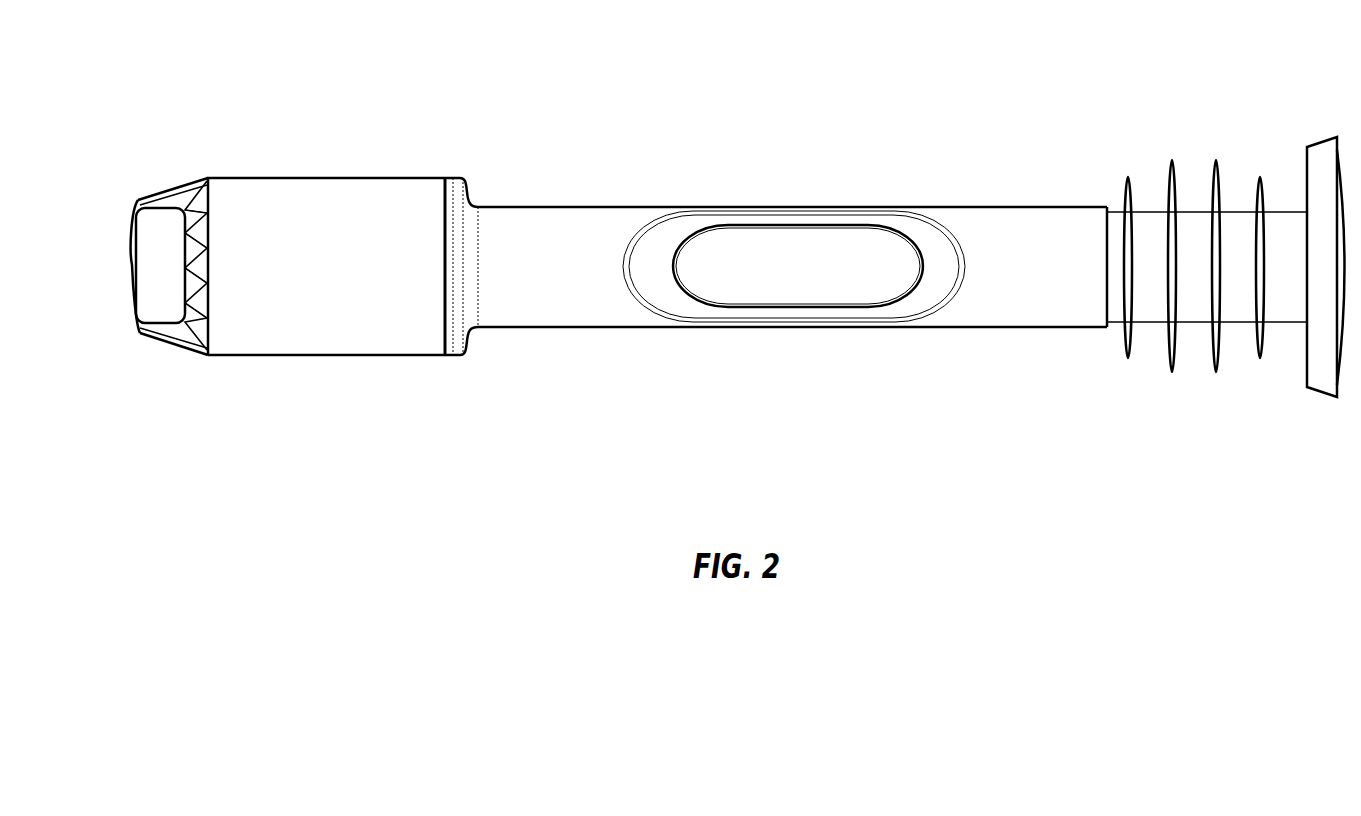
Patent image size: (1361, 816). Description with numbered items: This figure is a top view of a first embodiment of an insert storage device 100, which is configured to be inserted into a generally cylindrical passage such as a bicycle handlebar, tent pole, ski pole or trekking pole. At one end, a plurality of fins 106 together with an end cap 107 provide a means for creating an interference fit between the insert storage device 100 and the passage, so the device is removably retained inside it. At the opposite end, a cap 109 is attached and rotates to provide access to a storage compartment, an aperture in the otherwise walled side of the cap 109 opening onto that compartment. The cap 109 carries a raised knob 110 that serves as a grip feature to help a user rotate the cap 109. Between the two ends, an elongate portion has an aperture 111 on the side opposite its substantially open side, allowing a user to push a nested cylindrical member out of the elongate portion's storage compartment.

The insert storage device 100 is at (118, 66).
The fins 106 is at (1260, 356).
The end cap 107 is at (1320, 362).
The cap 109 is at (312, 206).
The raised knob 110 is at (146, 200).
The aperture 111 is at (807, 287).